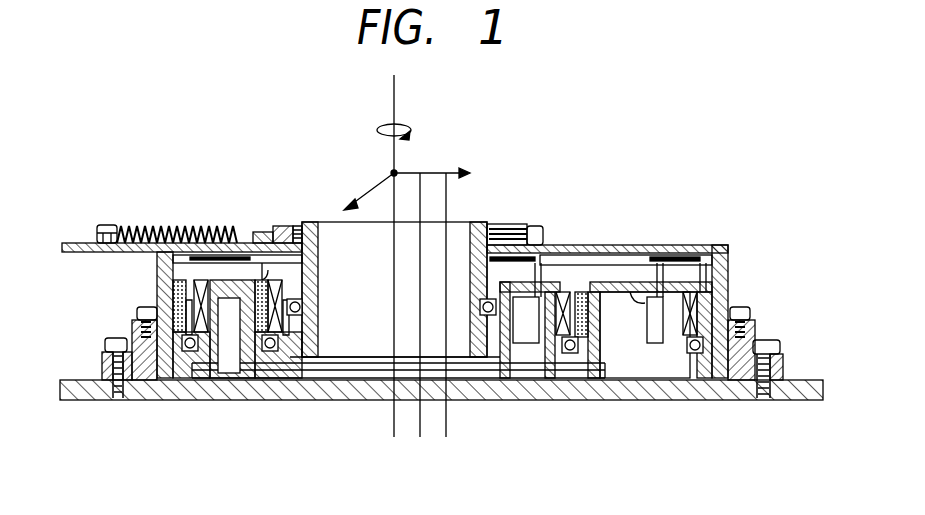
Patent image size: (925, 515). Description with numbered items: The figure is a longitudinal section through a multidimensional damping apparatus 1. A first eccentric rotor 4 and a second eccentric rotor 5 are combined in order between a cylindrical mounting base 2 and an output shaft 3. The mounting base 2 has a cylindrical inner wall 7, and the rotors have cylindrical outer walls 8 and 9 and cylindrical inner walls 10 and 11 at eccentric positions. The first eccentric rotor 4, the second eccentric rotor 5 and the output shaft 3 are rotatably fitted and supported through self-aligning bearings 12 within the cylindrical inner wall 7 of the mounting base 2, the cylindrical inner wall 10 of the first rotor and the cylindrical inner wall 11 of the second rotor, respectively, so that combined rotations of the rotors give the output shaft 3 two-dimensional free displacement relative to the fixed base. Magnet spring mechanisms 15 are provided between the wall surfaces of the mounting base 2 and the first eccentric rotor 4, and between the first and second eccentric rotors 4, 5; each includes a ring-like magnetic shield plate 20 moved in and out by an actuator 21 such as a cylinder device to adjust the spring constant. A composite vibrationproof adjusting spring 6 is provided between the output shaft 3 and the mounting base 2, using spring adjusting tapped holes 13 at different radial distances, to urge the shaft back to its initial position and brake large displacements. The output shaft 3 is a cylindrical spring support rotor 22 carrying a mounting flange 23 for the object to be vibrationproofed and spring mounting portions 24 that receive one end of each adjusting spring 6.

The multidimensional damping apparatus 1 is at (527, 195).
The cylindrical mounting base 2 is at (784, 360).
The output shaft 3 is at (484, 218).
The first eccentric rotor 4 is at (668, 365).
The second eccentric rotor 5 is at (509, 400).
The composite vibrationproof adjusting spring 6 is at (155, 226).
The cylindrical inner wall 7 is at (692, 400).
The cylindrical outer wall 8 is at (181, 400).
The cylindrical outer wall 9 is at (272, 352).
The cylindrical inner wall 10 is at (572, 353).
The cylindrical inner wall 11 is at (484, 360).
The self-aligning bearing 12 is at (716, 447).
The spring adjusting tapped hole 13 is at (64, 243).
The magnet spring mechanism 15 is at (588, 258).
The ring-like magnetic shield plate 20 is at (222, 243).
The actuator 21 is at (634, 270).
The cylindrical spring support rotor 22 is at (312, 222).
The mounting flange 23 is at (268, 248).
The spring mounting portion 24 is at (262, 236).